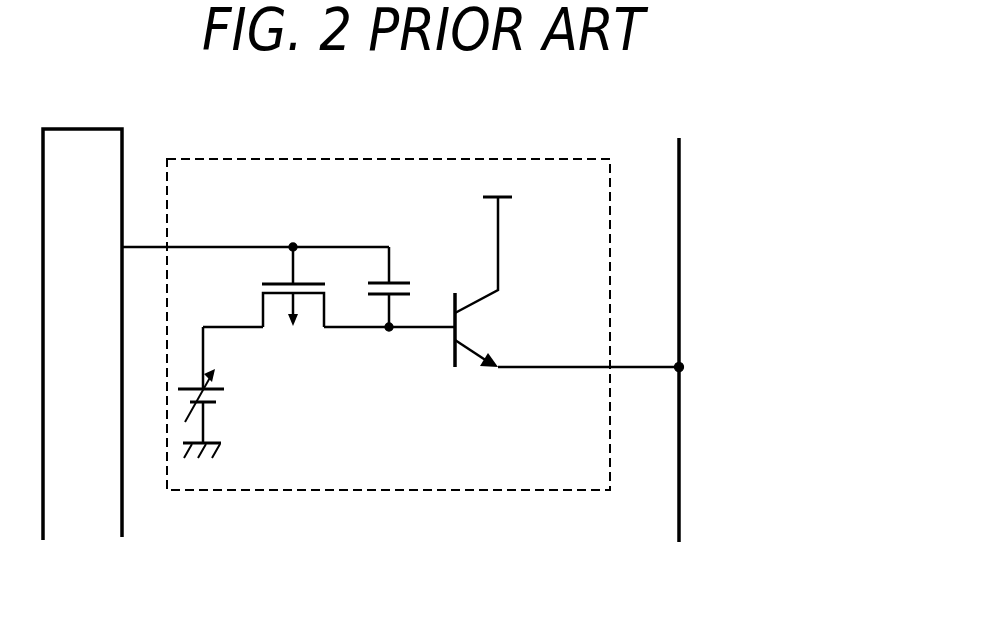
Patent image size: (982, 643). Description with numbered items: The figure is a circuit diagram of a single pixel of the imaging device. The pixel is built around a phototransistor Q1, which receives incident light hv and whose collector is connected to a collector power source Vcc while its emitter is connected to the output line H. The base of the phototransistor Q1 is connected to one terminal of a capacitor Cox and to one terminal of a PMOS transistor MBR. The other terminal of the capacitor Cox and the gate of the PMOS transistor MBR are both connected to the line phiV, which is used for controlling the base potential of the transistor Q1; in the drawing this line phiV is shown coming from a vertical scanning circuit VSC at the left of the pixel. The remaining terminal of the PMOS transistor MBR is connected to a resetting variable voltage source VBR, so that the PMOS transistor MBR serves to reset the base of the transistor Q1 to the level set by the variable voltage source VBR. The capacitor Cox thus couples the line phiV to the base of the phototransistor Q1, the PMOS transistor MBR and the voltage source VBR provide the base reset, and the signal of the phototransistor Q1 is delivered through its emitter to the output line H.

The vertical scanning circuit VSC is at (86, 507).
The line φV phiV is at (255, 230).
The PMOS transistor MBR is at (294, 305).
The capacitor Cox is at (376, 287).
The resetting variable voltage source VBR is at (225, 392).
The phototransistor Q1 is at (567, 282).
The collector power source Vcc is at (503, 182).
The incident light h nu hv is at (453, 263).
The output line H is at (787, 340).